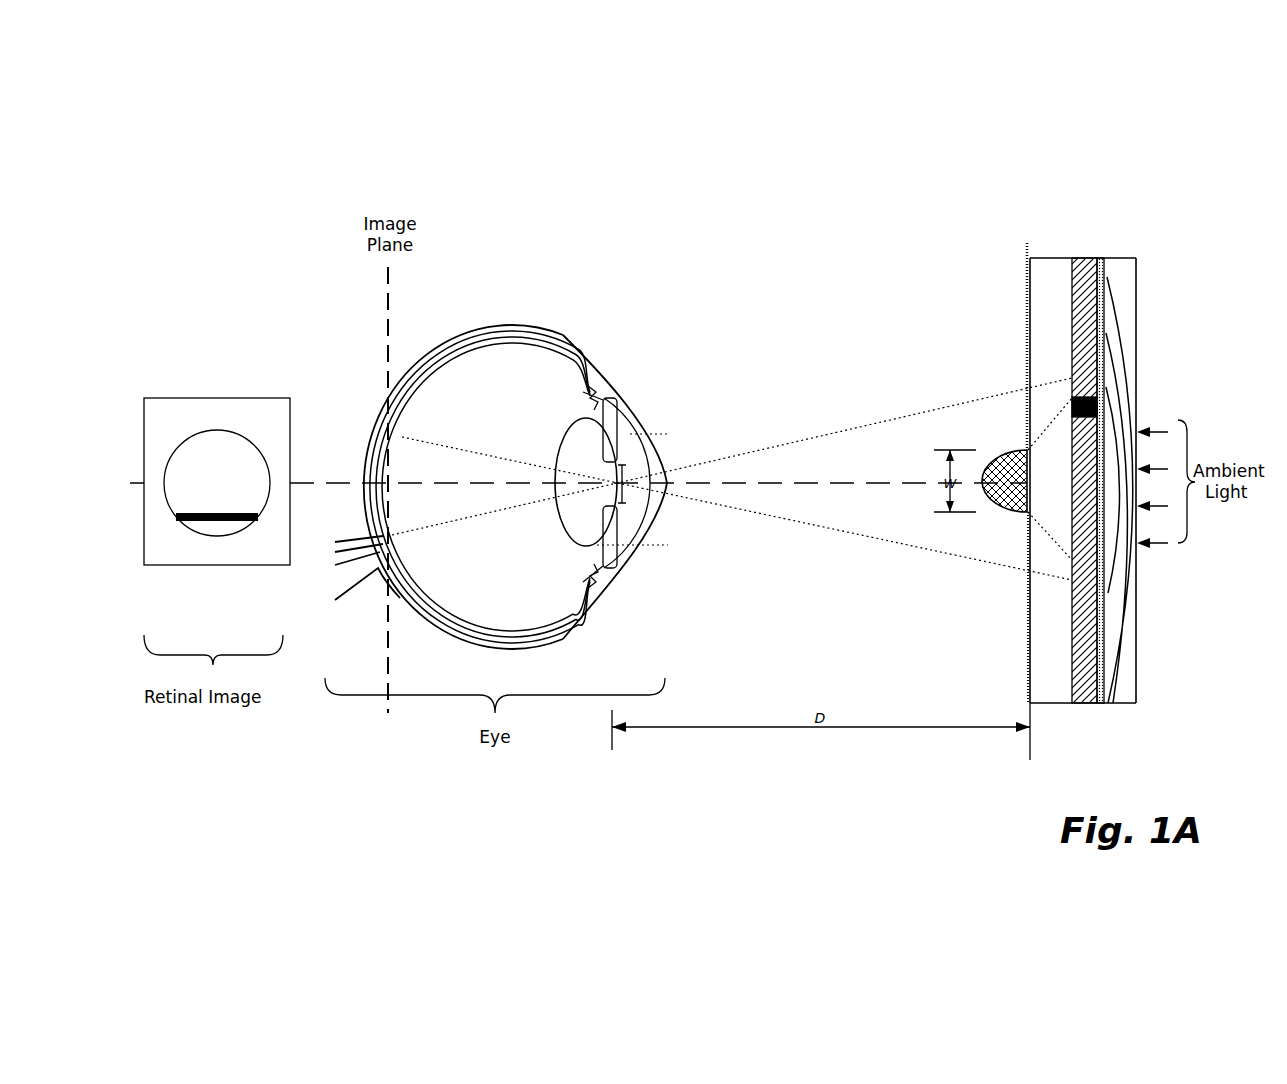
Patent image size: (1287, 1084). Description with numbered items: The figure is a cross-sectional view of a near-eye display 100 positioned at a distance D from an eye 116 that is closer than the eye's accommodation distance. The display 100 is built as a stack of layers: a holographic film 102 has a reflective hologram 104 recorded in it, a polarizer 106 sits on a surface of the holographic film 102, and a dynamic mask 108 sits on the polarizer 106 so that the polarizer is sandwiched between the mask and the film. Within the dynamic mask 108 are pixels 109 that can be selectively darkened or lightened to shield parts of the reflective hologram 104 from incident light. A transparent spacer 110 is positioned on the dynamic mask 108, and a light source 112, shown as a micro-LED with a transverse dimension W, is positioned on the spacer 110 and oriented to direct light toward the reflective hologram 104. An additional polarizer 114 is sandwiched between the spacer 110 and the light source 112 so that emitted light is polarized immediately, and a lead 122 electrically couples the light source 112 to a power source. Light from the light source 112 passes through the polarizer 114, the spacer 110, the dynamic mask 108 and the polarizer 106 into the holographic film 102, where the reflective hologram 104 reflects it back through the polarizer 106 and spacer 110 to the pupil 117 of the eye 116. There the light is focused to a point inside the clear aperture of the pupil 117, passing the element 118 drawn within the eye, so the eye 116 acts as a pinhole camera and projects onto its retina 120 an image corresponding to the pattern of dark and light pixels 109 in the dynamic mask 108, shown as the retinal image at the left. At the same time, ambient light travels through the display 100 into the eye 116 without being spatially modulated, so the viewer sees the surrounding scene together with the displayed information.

The near-eye display 100 is at (1055, 195).
The holographic film 102 is at (1133, 660).
The reflective hologram 104 is at (1122, 318).
The polarizer 106 is at (1100, 705).
The dynamic mask 108 is at (1080, 259).
The pixels 109 is at (1083, 396).
The transparent spacer 110 is at (1040, 652).
The light source 112 is at (988, 467).
The polarizer 114 is at (1028, 520).
The eye 116 is at (519, 449).
The pupil 117 is at (624, 478).
The crystalline lens 118 is at (578, 457).
The retina 120 is at (397, 448).
The lead 122 is at (1026, 252).